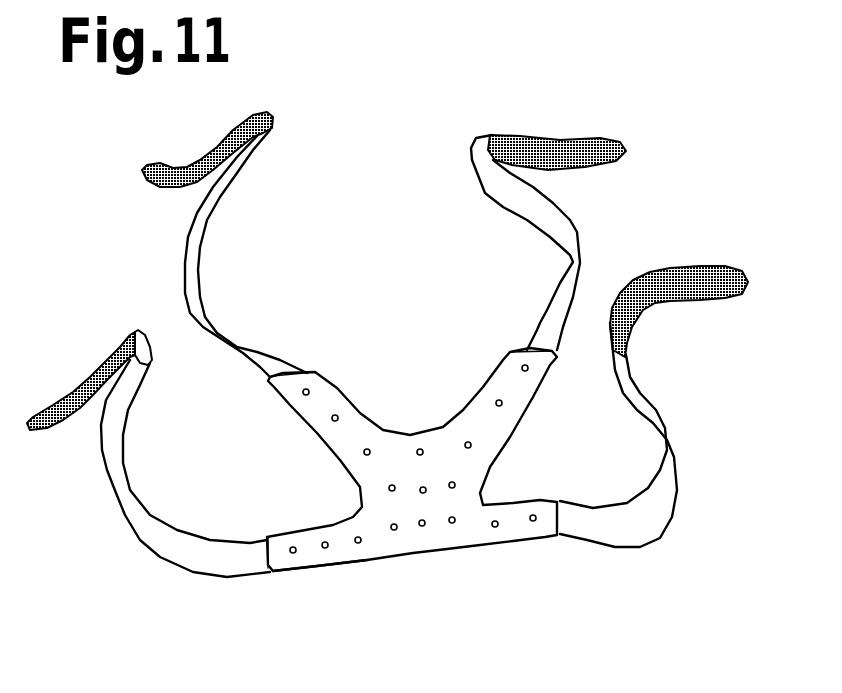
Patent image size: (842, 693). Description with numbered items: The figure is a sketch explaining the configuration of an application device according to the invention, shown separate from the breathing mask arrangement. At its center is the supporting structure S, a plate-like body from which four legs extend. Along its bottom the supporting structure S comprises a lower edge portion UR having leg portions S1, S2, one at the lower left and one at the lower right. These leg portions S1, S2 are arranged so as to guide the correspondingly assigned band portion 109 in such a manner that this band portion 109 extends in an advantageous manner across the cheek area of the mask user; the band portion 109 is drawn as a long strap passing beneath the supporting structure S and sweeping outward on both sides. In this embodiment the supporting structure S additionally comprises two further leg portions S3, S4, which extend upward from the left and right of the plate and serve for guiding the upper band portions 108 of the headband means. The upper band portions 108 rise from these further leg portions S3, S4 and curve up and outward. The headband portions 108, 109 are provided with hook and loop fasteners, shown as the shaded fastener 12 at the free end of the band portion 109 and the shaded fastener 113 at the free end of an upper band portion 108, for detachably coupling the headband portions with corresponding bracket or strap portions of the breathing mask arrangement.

The hook and loop fastener 12 is at (67, 420).
The hook and loop fastener 113 is at (167, 190).
The upper band portion 108 is at (196, 257).
The band portion 109 is at (190, 550).
The supporting structure S is at (405, 540).
The leg portion S1 is at (280, 545).
The leg portion S2 is at (547, 513).
The further leg portion S3 is at (325, 397).
The further leg portion S4 is at (503, 363).
The lower edge portion UR is at (307, 569).